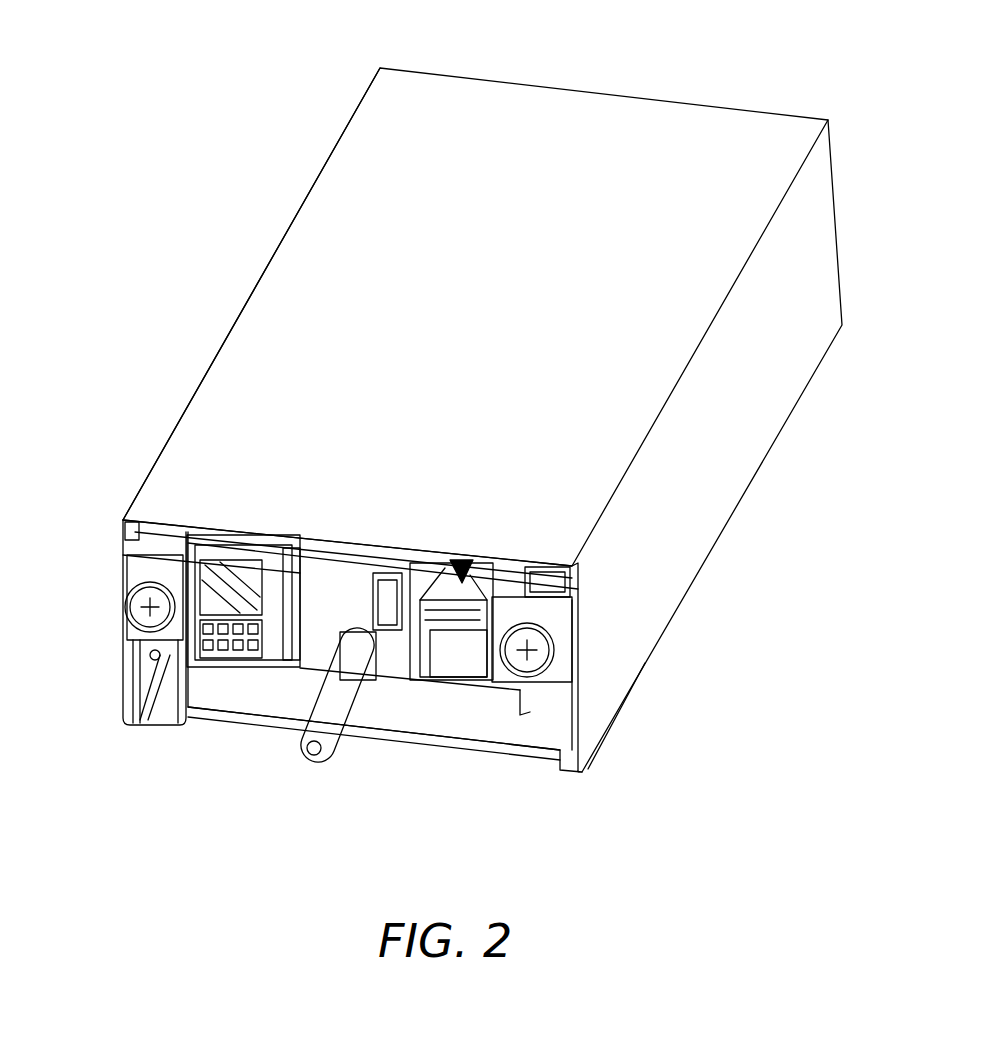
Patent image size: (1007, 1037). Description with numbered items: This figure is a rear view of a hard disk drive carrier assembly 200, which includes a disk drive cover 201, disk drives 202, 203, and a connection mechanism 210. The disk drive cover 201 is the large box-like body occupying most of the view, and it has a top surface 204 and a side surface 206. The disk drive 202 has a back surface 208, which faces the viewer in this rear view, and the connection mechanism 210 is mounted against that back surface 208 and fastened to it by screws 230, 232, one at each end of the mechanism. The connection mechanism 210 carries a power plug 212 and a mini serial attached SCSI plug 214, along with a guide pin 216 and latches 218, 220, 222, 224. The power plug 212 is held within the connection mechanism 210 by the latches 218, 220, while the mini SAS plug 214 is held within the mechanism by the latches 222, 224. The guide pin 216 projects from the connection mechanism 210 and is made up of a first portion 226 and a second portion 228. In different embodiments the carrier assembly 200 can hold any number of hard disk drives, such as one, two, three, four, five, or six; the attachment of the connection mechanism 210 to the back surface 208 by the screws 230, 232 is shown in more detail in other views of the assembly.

The hard disk drive carrier assembly 200 is at (436, 433).
The disk drive cover 201 is at (475, 317).
The disk drive 202 is at (352, 666).
The disk drive 203 is at (302, 550).
The top surface 204 is at (251, 294).
The side surface 206 is at (712, 446).
The back surface 208 is at (629, 610).
The connection mechanism 210 is at (108, 622).
The power plug 212 is at (243, 560).
The mini SAS plug 214 is at (445, 701).
The guide pin 216 is at (374, 783).
The latch 218 is at (155, 722).
The latch 220 is at (232, 698).
The latch 222 is at (361, 722).
The latch 224 is at (441, 574).
The first portion 226 is at (333, 732).
The second portion 228 is at (373, 555).
The screw 230 is at (120, 597).
The screw 232 is at (591, 667).